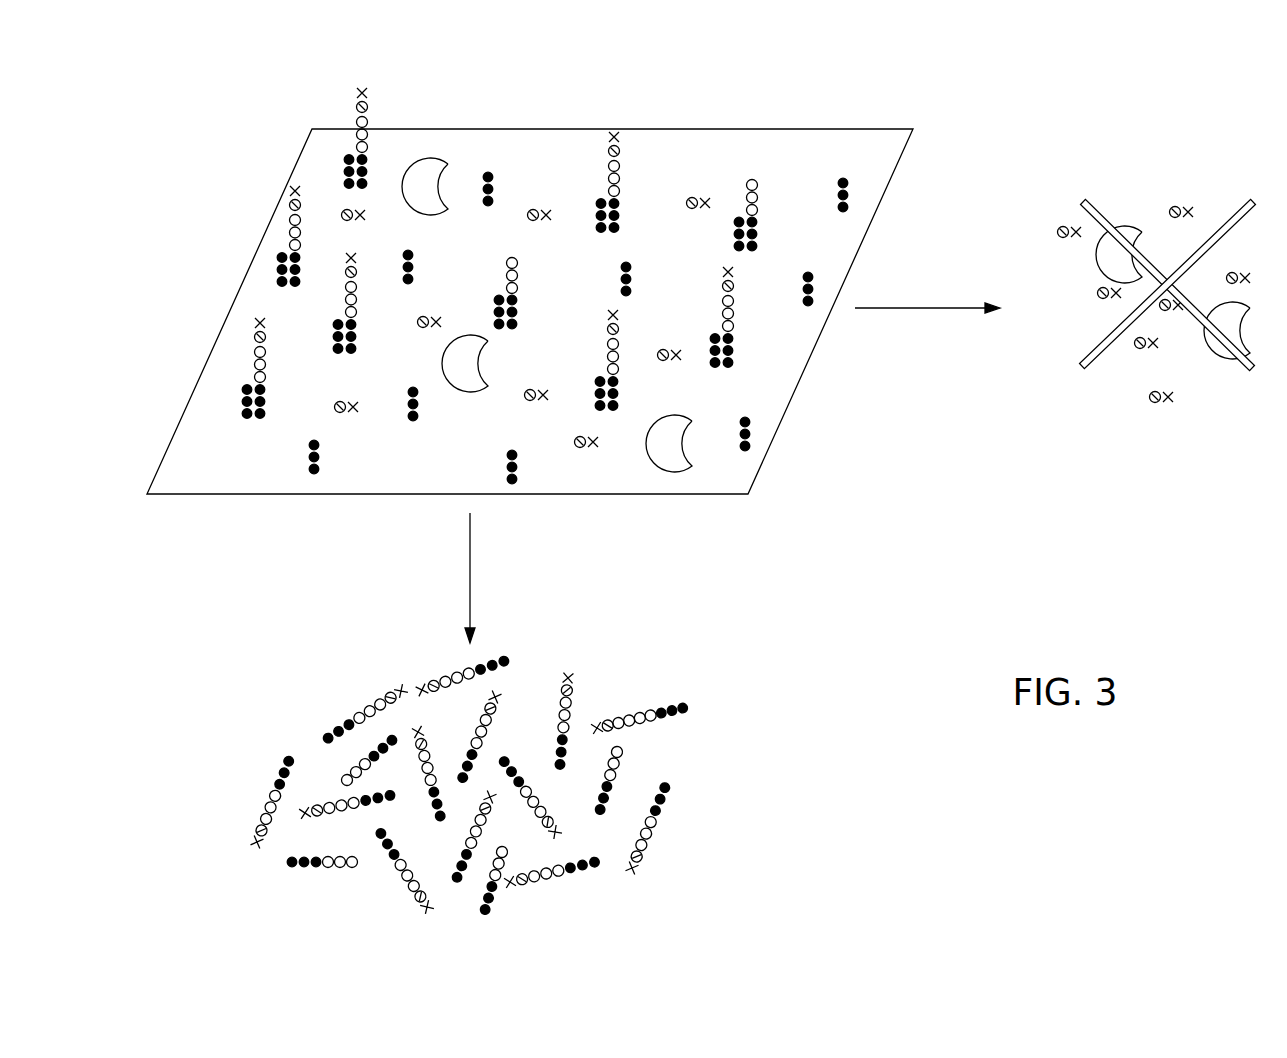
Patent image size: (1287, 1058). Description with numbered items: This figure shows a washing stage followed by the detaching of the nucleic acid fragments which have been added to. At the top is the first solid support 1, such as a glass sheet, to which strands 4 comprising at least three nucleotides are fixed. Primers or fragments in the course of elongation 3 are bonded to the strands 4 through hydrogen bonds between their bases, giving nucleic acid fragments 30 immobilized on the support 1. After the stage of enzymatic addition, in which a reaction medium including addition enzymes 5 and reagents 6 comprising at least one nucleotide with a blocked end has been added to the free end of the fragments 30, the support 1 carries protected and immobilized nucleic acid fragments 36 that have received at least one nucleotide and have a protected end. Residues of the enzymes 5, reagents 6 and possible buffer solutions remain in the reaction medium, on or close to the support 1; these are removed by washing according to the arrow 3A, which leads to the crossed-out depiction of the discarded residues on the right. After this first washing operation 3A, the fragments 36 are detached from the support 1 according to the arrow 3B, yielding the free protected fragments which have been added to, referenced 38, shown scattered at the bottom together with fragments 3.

The first solid support 1 is at (210, 478).
The protected and immobilized nucleic acid fragments 36 is at (372, 93).
The nucleic acid fragments immobilized on the first solid support 30 is at (755, 175).
The strands 4 is at (752, 433).
The reagents 6 is at (699, 192).
The addition enzymes 5 is at (431, 178).
The free protected fragments which have been added to 38 is at (358, 705).
The primers or fragments in the course of elongation 3 is at (622, 765).
The washing 3A is at (927, 292).
The detaching 3B is at (490, 578).